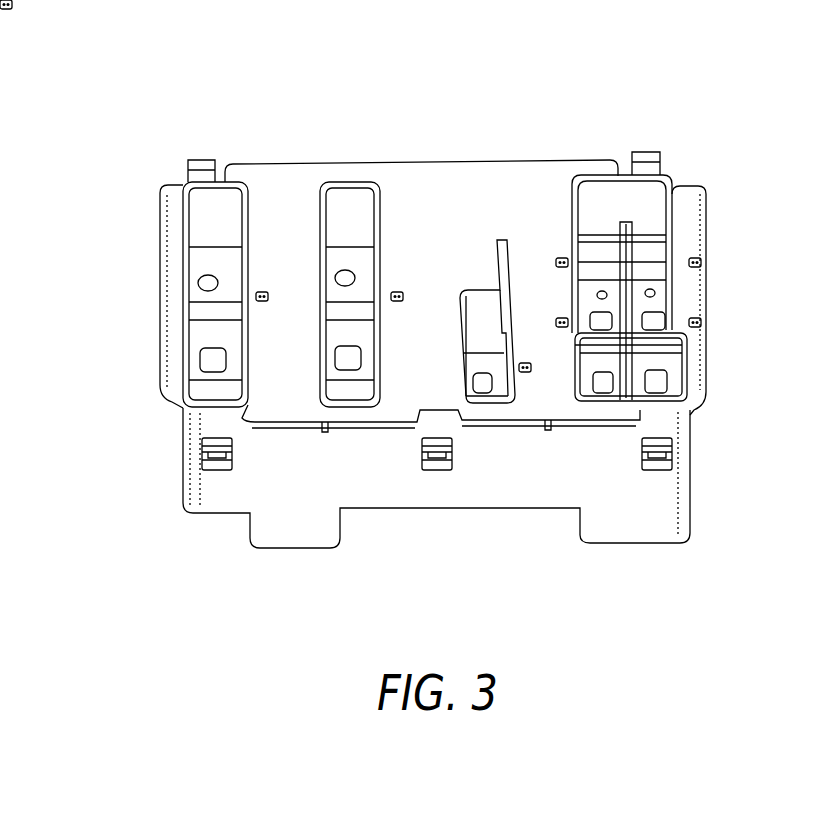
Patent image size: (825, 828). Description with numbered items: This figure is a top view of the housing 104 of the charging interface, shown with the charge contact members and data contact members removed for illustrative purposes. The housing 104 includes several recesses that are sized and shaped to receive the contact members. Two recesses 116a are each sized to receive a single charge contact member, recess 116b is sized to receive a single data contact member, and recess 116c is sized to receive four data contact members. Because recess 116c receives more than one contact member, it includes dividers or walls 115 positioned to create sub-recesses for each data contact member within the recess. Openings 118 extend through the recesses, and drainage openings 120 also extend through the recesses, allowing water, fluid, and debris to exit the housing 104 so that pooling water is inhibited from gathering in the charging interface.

The housing 104 is at (542, 66).
The recesses 116a is at (209, 194).
The recess 116b is at (490, 418).
The recess 116c is at (643, 418).
The openings 118 is at (214, 357).
The drainage openings 120 is at (334, 275).
The dividers or walls 115 is at (675, 343).